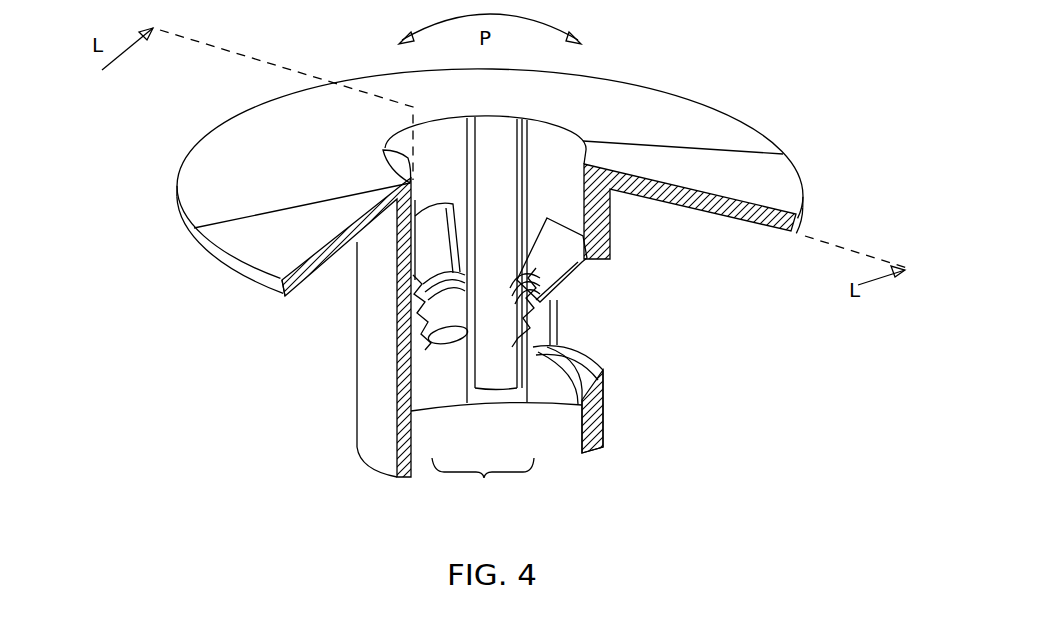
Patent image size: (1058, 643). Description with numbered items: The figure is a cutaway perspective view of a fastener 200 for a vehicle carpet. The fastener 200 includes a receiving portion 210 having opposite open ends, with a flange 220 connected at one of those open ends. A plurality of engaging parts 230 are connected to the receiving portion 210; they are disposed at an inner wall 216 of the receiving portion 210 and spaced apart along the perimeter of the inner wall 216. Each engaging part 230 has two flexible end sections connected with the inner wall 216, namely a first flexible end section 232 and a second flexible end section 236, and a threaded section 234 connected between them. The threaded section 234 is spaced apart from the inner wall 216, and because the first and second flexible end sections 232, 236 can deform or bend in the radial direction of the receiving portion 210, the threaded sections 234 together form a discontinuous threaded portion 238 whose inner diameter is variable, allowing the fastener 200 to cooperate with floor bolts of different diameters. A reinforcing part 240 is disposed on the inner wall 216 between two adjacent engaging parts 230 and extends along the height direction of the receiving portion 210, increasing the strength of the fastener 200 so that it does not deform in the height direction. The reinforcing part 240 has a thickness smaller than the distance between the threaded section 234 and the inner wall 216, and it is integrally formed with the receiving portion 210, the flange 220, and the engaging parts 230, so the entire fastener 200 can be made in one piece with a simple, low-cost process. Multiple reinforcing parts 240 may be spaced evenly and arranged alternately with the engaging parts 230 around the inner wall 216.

The fastener 200 is at (763, 59).
The receiving portion 210 is at (366, 396).
The inner wall 216 is at (556, 148).
The flange 220 is at (241, 132).
The engaging part 230 is at (453, 206).
The first flexible end section 232 is at (440, 258).
The threaded section 234 is at (474, 322).
The second flexible end section 236 is at (430, 348).
The discontinuous threaded portion 238 is at (483, 483).
The reinforcing part 240 is at (384, 150).